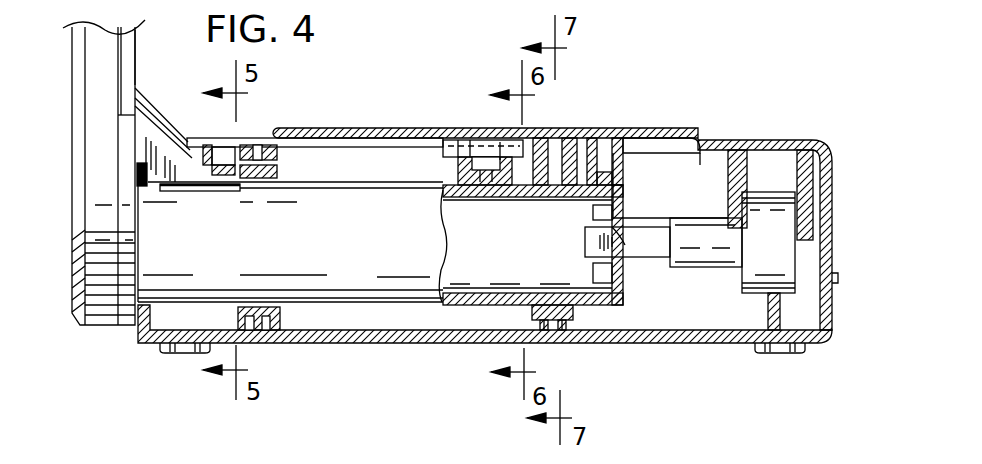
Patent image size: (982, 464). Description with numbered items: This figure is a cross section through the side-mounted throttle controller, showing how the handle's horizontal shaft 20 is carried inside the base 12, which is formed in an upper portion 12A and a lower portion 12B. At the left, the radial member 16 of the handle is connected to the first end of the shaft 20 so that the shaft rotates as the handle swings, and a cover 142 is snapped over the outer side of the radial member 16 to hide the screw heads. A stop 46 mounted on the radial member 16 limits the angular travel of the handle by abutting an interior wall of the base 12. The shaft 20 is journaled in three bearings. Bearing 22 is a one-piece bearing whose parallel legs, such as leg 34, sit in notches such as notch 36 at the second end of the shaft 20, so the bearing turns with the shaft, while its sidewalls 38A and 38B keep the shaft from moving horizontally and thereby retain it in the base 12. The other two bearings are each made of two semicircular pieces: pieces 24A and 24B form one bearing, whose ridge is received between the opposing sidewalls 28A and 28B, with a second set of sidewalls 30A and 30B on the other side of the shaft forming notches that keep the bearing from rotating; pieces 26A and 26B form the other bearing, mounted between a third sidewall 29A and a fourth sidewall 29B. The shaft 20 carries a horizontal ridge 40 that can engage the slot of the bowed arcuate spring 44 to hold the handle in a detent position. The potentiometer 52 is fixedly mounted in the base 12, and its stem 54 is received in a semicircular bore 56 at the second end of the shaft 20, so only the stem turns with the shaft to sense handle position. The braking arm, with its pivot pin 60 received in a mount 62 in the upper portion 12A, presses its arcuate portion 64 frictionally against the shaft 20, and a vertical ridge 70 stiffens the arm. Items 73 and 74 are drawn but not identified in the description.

The base 12 is at (811, 100).
The upper portion of base 12A is at (833, 230).
The lower portion of base 12B is at (835, 305).
The radial member 16 is at (137, 45).
The horizontal shaft 20 is at (350, 258).
The bearing 22 is at (612, 187).
The bearing piece 24A is at (565, 170).
The bearing piece 24B is at (532, 318).
The bearing piece 26A is at (283, 175).
The bearing piece 26B is at (280, 310).
The sidewall 28A is at (573, 160).
The sidewall 28B is at (540, 160).
The third sidewall 29A is at (325, 133).
The fourth sidewall 29B is at (215, 150).
The sidewall 30A is at (575, 315).
The sidewall 30B is at (535, 315).
The leg 34 is at (590, 225).
The notch 36 is at (590, 263).
The sidewall 38A is at (648, 132).
The sidewall 38B is at (605, 150).
The horizontal ridge 40 is at (230, 193).
The arcuate spring 44 is at (220, 165).
The stop 46 is at (148, 180).
The potentiometer 52 is at (752, 297).
The stem 54 is at (630, 237).
The semicircular bore 56 is at (620, 247).
The pivot pin 60 is at (452, 158).
The mount 62 is at (437, 150).
The arcuate portion 64 is at (467, 200).
The vertical ridge 70 is at (487, 153).
The slot 73 is at (460, 168).
The spring 74 is at (500, 160).
The cover 142 is at (72, 180).